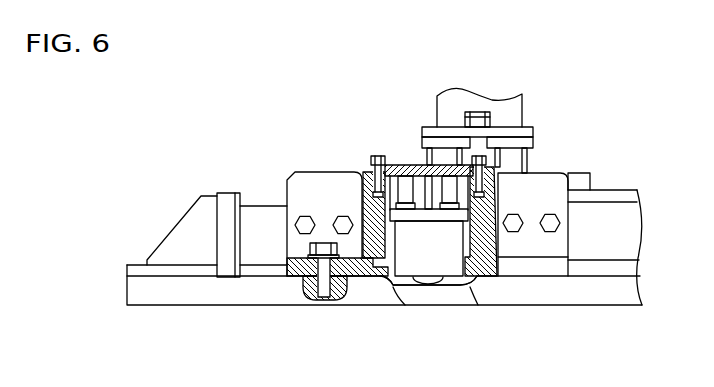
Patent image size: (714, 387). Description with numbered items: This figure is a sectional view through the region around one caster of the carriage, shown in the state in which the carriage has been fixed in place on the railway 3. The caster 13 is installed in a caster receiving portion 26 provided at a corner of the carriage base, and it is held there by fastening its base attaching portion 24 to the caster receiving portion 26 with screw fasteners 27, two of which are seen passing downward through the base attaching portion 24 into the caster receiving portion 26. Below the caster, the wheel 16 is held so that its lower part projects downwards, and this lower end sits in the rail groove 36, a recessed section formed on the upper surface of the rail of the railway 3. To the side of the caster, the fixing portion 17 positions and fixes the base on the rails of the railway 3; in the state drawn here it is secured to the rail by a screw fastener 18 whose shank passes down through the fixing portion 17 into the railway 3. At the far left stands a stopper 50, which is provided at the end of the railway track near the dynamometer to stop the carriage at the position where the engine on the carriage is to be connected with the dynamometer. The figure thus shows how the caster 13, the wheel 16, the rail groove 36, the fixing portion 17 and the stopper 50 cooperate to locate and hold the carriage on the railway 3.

The railway 3 is at (348, 294).
The second caster 13 is at (450, 265).
The wheel 16 is at (428, 283).
The fixing portion 17 is at (297, 281).
The screw fastener 18 is at (323, 302).
The base attaching portion 24 is at (412, 165).
The caster receiving portion 26 is at (367, 195).
The screw fastener 27 is at (377, 156).
The rail groove 36 is at (397, 284).
The stopper 50 is at (226, 207).